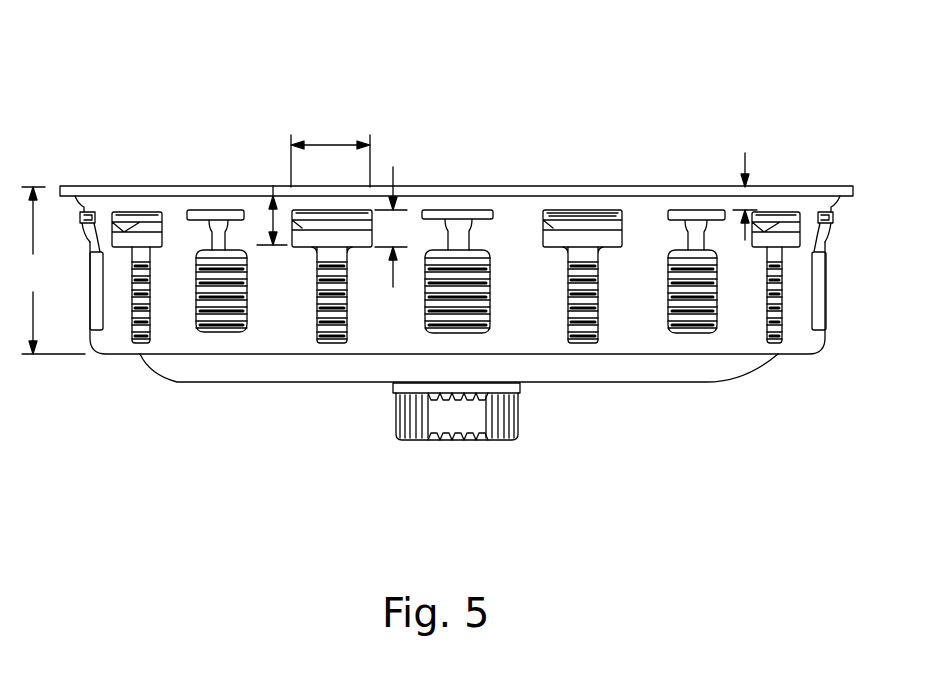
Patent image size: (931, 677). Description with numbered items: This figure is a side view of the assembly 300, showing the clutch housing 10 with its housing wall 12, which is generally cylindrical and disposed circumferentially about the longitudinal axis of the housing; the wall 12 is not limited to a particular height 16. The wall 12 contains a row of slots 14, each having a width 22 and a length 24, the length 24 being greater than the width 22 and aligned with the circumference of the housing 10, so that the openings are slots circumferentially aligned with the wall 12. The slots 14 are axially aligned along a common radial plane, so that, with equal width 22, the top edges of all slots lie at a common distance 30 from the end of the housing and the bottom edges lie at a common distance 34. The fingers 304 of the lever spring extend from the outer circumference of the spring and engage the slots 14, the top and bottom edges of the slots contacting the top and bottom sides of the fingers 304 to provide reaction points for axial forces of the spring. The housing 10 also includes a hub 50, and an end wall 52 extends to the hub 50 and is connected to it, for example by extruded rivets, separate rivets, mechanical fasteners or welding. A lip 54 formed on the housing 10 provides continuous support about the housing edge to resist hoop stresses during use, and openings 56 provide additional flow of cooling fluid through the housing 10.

The clutch housing 10 is at (120, 355).
The housing wall 12 is at (273, 307).
The slots 14 is at (618, 207).
The height 16 is at (53, 270).
The width 22 is at (393, 178).
The length 24 is at (325, 143).
The distance 30 is at (745, 155).
The distance 34 is at (277, 218).
The hub 50 is at (413, 440).
The end wall 52 is at (597, 383).
The lip 54 is at (830, 196).
The openings 56 is at (615, 310).
The assembly 300 is at (380, 117).
The fingers 304 is at (590, 212).